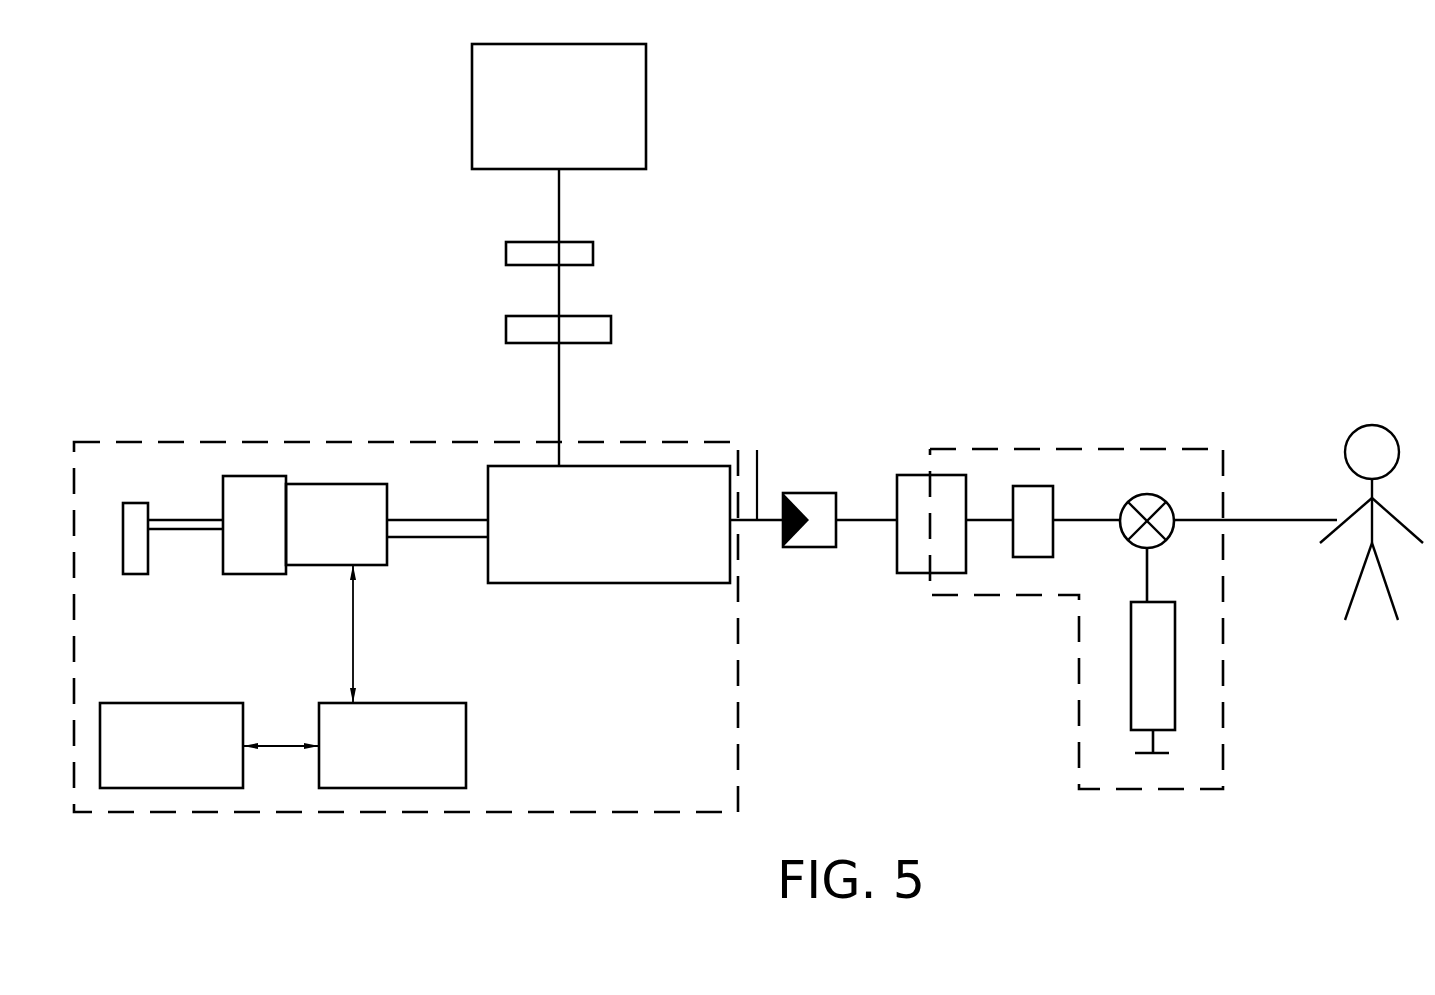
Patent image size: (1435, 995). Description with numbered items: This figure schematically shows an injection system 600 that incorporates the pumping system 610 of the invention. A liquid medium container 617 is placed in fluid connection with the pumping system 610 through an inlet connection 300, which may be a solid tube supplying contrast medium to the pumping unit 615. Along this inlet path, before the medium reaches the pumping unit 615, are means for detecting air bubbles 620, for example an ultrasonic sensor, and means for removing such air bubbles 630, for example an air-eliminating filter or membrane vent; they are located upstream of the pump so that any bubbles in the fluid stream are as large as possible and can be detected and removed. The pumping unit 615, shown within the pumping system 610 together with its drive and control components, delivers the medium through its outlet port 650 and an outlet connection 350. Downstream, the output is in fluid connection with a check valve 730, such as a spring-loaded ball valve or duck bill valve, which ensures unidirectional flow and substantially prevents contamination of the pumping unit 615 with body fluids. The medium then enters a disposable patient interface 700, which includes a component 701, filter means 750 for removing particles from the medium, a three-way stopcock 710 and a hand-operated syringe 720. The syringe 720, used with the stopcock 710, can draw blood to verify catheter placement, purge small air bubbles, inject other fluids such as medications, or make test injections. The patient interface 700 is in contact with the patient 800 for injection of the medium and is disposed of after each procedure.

The inlet connection 300 is at (559, 205).
The outlet connection 350 is at (765, 469).
The injection system 600 is at (1017, 207).
The pumping system 610 is at (742, 697).
The pumping unit 615 is at (662, 466).
The liquid medium container 617 is at (646, 119).
The means for detecting air bubbles 620 is at (593, 255).
The means for removing air bubbles 630 is at (506, 333).
The outlet port 650 is at (730, 520).
The disposable patient interface 700 is at (1225, 755).
The component 701 is at (946, 475).
The three-way stopcock 710 is at (1147, 494).
The hand-operated syringe 720 is at (1132, 672).
The check valve 730 is at (815, 492).
The filter means 750 is at (1034, 486).
The patient 800 is at (1369, 426).